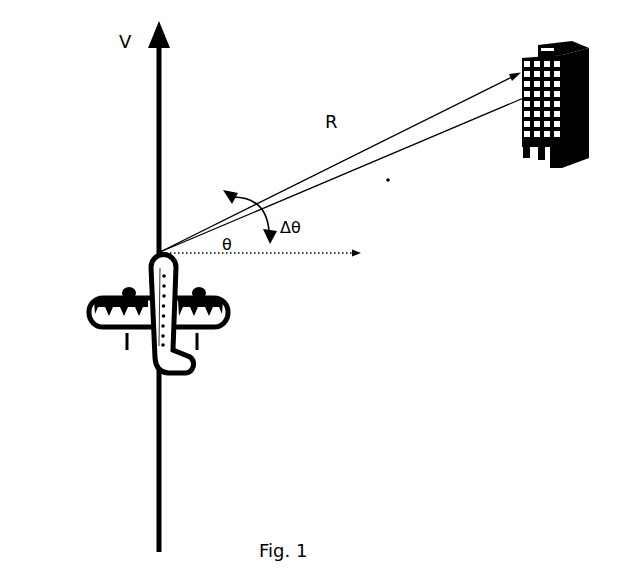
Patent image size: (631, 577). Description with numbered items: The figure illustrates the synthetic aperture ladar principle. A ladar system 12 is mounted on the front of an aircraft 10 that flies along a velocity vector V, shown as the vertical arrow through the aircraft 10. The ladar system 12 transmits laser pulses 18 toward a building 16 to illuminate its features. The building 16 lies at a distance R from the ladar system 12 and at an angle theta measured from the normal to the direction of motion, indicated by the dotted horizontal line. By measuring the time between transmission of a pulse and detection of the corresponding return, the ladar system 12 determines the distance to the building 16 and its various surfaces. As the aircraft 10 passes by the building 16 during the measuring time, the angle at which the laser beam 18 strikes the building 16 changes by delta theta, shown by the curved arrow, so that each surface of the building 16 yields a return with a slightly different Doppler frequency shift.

The aircraft 10 is at (102, 296).
The ladar system 12 is at (158, 251).
The building 16 is at (521, 59).
The laser pulses 18 is at (377, 163).